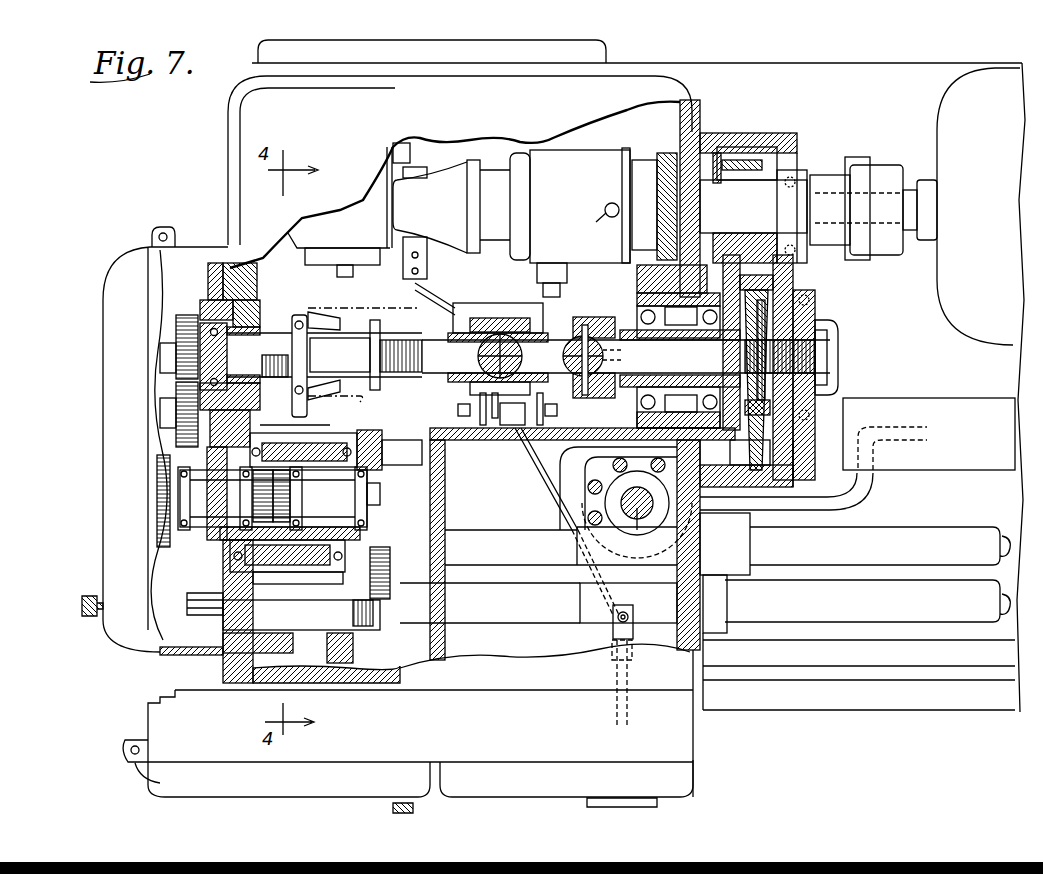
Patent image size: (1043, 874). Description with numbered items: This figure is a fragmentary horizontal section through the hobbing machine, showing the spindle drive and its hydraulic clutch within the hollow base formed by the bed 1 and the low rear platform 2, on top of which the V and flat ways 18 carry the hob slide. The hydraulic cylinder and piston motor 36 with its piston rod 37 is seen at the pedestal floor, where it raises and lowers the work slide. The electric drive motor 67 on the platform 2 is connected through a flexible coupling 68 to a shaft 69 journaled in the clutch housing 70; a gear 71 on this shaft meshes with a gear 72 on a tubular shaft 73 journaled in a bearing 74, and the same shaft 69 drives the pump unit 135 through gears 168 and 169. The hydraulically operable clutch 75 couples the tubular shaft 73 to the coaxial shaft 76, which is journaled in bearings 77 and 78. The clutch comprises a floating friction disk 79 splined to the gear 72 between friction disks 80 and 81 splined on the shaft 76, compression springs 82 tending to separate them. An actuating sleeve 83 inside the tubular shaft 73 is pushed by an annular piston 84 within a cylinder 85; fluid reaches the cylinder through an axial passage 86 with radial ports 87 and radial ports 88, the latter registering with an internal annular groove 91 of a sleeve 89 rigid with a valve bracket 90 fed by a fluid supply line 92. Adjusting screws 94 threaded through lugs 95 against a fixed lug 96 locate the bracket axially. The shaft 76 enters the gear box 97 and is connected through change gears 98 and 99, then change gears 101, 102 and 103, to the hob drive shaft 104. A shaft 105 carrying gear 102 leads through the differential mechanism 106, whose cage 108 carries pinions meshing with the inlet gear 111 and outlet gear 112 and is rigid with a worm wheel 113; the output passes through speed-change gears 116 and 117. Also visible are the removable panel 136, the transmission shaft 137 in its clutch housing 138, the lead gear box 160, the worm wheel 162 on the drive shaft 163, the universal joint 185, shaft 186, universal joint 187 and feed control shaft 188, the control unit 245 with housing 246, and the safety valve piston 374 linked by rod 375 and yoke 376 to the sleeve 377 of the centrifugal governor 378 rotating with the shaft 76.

The bed 1 is at (225, 665).
The platform 2 is at (851, 70).
The V and flat ways 18 is at (962, 415).
The hydraulic cylinder and piston motor 36 is at (604, 494).
The piston rod 37 is at (637, 530).
The electric drive motor 67 is at (955, 92).
The flexible coupling 68 is at (895, 175).
The shaft 69 is at (770, 205).
The clutch housing 70 is at (736, 135).
The gear 71 is at (748, 160).
The gear 72 is at (752, 473).
The tubular shaft 73 is at (686, 332).
The bearing 74 is at (630, 295).
The hydraulically operable clutch 75 is at (816, 296).
The shaft 76 is at (826, 358).
The bearing 77 is at (216, 278).
The bearing 78 is at (816, 304).
The friction disk 79 is at (765, 430).
The friction disk 80 is at (770, 415).
The friction disk 81 is at (760, 455).
The compression springs 82 is at (785, 412).
The actuating sleeve 83 is at (706, 368).
The annular piston 84 is at (592, 326).
The cylinder 85 is at (592, 382).
The axial passage 86 is at (568, 378).
The radial ports 87 is at (626, 356).
The radial ports 88 is at (478, 356).
The sleeve 89 is at (514, 322).
The valve bracket 90 is at (536, 333).
The internal annular groove 91 is at (495, 420).
The fluid supply line 92 is at (500, 304).
The adjusting screws 94 is at (458, 412).
The lugs 95 is at (483, 426).
The fixed lug 96 is at (515, 426).
The gear box 97 is at (176, 250).
The change gear 98 is at (176, 320).
The change gear 99 is at (180, 385).
The change gear 101 is at (474, 392).
The change gear 102 is at (382, 460).
The change gear 103 is at (376, 590).
The hob drive shaft 104 is at (1003, 536).
The shaft 105 is at (384, 470).
The differential mechanism 106 is at (284, 409).
The cage 108 is at (243, 577).
The inlet gear 111 is at (365, 491).
The outlet gear 112 is at (258, 486).
The worm wheel 113 is at (302, 566).
The speed-change gear 116 is at (160, 468).
The speed-change gear 117 is at (200, 484).
The pump unit 135 is at (610, 140).
The removable panel 136 is at (604, 57).
The transmission shaft 137 is at (318, 268).
The clutch housing 138 is at (330, 228).
The lead gear box 160 is at (150, 790).
The worm wheel 162 is at (348, 660).
The drive shaft 163 is at (1000, 622).
The gear 168 is at (650, 183).
The gear 169 is at (661, 198).
The universal joint 185 is at (410, 292).
The shaft 186 is at (548, 488).
The universal joint 187 is at (628, 606).
The feed control shaft 188 is at (618, 669).
The control unit 245 is at (706, 778).
The housing 246 is at (690, 740).
The piston 374 is at (465, 302).
The rod 375 is at (408, 325).
The yoke 376 is at (373, 320).
The sleeve 377 is at (326, 308).
The centrifugal governor 378 is at (325, 299).